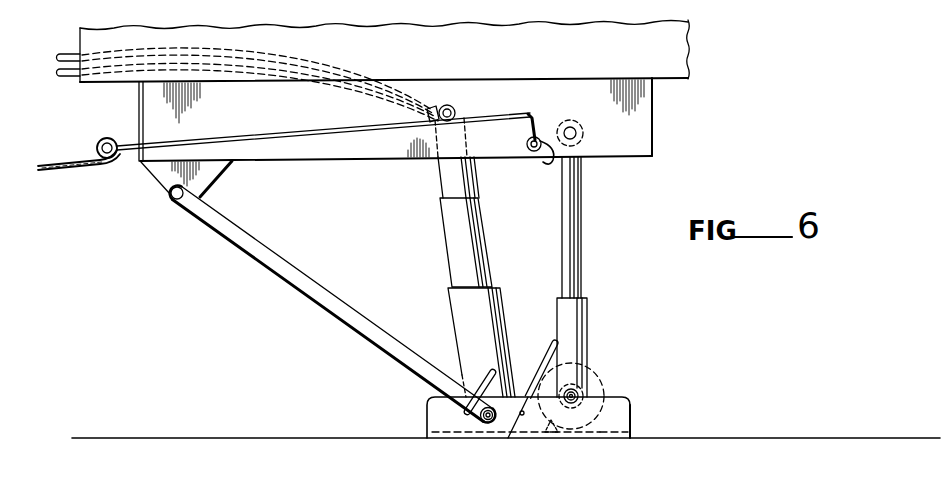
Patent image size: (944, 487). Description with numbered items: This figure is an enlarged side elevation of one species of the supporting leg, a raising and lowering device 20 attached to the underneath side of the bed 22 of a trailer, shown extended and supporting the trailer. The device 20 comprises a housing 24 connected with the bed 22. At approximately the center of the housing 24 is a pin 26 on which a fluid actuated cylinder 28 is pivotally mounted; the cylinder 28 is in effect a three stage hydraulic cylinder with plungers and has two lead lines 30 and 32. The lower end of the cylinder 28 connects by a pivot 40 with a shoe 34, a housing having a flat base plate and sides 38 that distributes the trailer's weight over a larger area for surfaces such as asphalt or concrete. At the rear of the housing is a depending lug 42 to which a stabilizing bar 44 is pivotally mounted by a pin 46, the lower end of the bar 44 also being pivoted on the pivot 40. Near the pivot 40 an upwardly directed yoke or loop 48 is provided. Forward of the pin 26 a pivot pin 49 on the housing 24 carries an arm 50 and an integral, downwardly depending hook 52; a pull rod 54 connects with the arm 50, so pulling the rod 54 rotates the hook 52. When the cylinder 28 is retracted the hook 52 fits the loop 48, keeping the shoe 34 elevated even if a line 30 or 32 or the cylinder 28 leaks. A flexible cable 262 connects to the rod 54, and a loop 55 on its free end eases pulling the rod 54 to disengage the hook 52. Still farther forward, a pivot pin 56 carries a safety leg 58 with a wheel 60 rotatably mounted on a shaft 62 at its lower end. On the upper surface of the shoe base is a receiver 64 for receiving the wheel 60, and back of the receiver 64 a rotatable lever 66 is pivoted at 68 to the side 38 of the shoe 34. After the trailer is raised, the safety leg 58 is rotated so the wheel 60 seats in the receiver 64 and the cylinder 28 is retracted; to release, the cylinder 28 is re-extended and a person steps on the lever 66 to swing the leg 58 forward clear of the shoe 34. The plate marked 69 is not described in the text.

The raising and lowering device 20 is at (656, 110).
The bed 22 is at (692, 54).
The housing 24 is at (655, 156).
The pin 26 is at (456, 110).
The fluid actuated cylinder 28 is at (457, 237).
The lead line 30 is at (75, 53).
The lead line 32 is at (75, 78).
The shoe 34 is at (427, 423).
The sides 38 is at (631, 402).
The pivot 40 is at (483, 428).
The depending lug 42 is at (213, 176).
The stabilizing bar 44 is at (246, 233).
The pin 46 is at (171, 198).
The yoke or loop 48 is at (485, 375).
The pivot pin 49 is at (540, 140).
The arm 50 is at (527, 126).
The hook 52 is at (552, 159).
The pull rod 54 is at (363, 128).
The loop 55 is at (108, 139).
The pivot pin 56 is at (580, 128).
The safety leg 58 is at (573, 197).
The wheel 60 is at (593, 385).
The shaft 62 is at (582, 388).
The receiver 64 is at (552, 437).
The lever 66 is at (548, 358).
The pivot 68 is at (509, 436).
The plate 69 is at (615, 436).
The flexible cable 262 is at (70, 173).